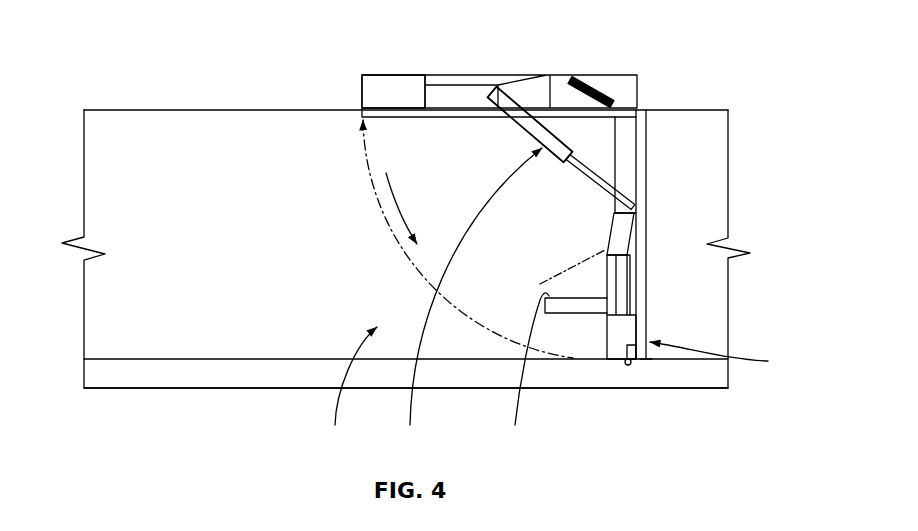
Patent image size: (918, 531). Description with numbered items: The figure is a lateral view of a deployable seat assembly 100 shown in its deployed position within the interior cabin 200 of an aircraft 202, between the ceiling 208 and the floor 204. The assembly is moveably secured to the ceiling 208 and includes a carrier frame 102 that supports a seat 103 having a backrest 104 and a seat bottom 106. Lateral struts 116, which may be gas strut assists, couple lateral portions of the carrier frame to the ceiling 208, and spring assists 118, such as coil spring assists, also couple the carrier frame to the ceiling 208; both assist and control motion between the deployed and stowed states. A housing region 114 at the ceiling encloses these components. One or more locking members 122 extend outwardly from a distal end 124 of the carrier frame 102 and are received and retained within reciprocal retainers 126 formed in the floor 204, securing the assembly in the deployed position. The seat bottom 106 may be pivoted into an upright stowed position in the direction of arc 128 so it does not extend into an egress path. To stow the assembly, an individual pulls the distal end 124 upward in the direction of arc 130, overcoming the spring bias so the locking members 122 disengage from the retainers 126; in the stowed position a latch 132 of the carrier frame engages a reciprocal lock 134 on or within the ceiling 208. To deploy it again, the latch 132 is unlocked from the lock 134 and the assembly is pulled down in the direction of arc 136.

The deployable seat assembly 100 is at (577, 192).
The carrier frame 102 is at (646, 160).
The seat 103 is at (587, 235).
The backrest 104 is at (625, 230).
The seat bottom 106 is at (523, 374).
The housing 114 is at (408, 75).
The lateral struts 116 is at (467, 301).
The spring assists 118 is at (608, 78).
The locking members 122 is at (631, 347).
The distal end 124 is at (648, 349).
The retainers 126 is at (628, 365).
The arc 128 is at (552, 278).
The arc 130 is at (380, 207).
The latch 132 is at (731, 358).
The lock 134 is at (362, 95).
The arc 136 is at (398, 207).
The interior cabin 200 is at (346, 391).
The aircraft 202 is at (563, 423).
The floor 204 is at (243, 359).
The ceiling 208 is at (240, 110).